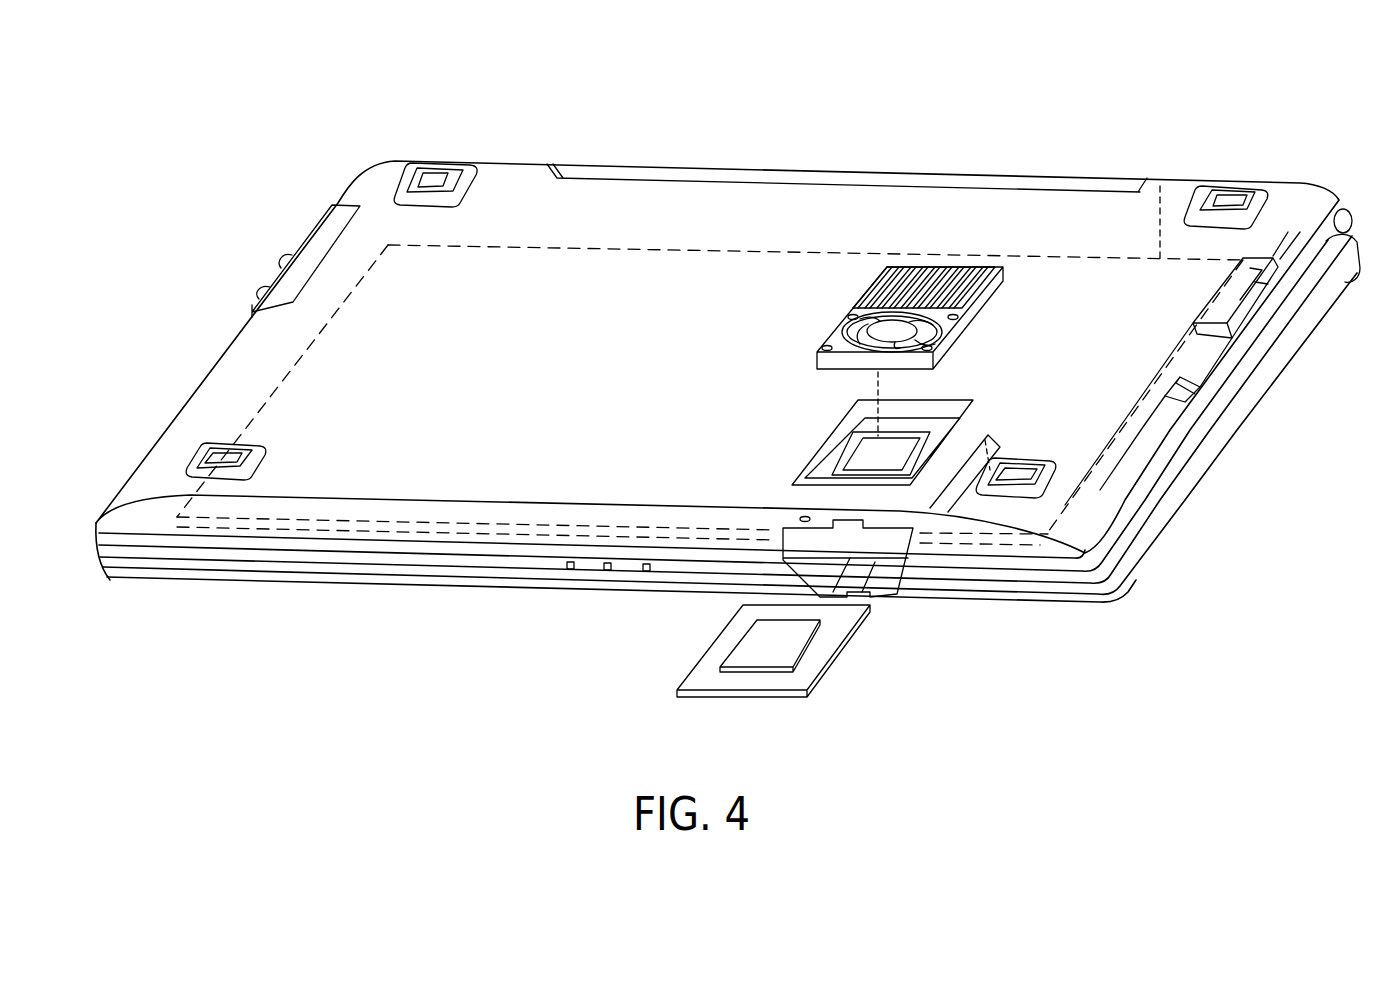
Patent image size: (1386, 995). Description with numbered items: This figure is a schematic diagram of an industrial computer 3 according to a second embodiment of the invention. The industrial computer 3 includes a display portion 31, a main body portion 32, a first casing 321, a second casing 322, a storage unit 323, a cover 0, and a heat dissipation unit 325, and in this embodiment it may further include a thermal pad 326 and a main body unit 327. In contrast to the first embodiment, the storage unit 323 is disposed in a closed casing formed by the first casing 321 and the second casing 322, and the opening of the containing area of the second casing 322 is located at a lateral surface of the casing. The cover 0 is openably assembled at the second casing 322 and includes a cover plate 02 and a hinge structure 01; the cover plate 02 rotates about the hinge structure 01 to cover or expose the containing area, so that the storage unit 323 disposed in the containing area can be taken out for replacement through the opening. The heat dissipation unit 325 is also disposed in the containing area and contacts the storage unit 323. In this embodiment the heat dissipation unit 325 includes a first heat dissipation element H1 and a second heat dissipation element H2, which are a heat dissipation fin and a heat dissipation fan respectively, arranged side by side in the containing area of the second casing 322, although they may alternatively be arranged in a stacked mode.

The industrial computer 3 is at (242, 148).
The display portion 31 is at (118, 580).
The main body portion 32 is at (98, 524).
The first casing 321 is at (1100, 555).
The second casing 322 is at (1172, 505).
The storage unit 323 is at (694, 684).
The heat dissipation unit 325 is at (1031, 297).
The thermal pad 326 is at (753, 645).
The main body unit 327 is at (1182, 176).
The cover 0 is at (929, 602).
The hinge structure 01 is at (868, 578).
The cover plate 02 is at (877, 594).
The first heat dissipation element H1 is at (982, 296).
The second heat dissipation element H2 is at (956, 327).